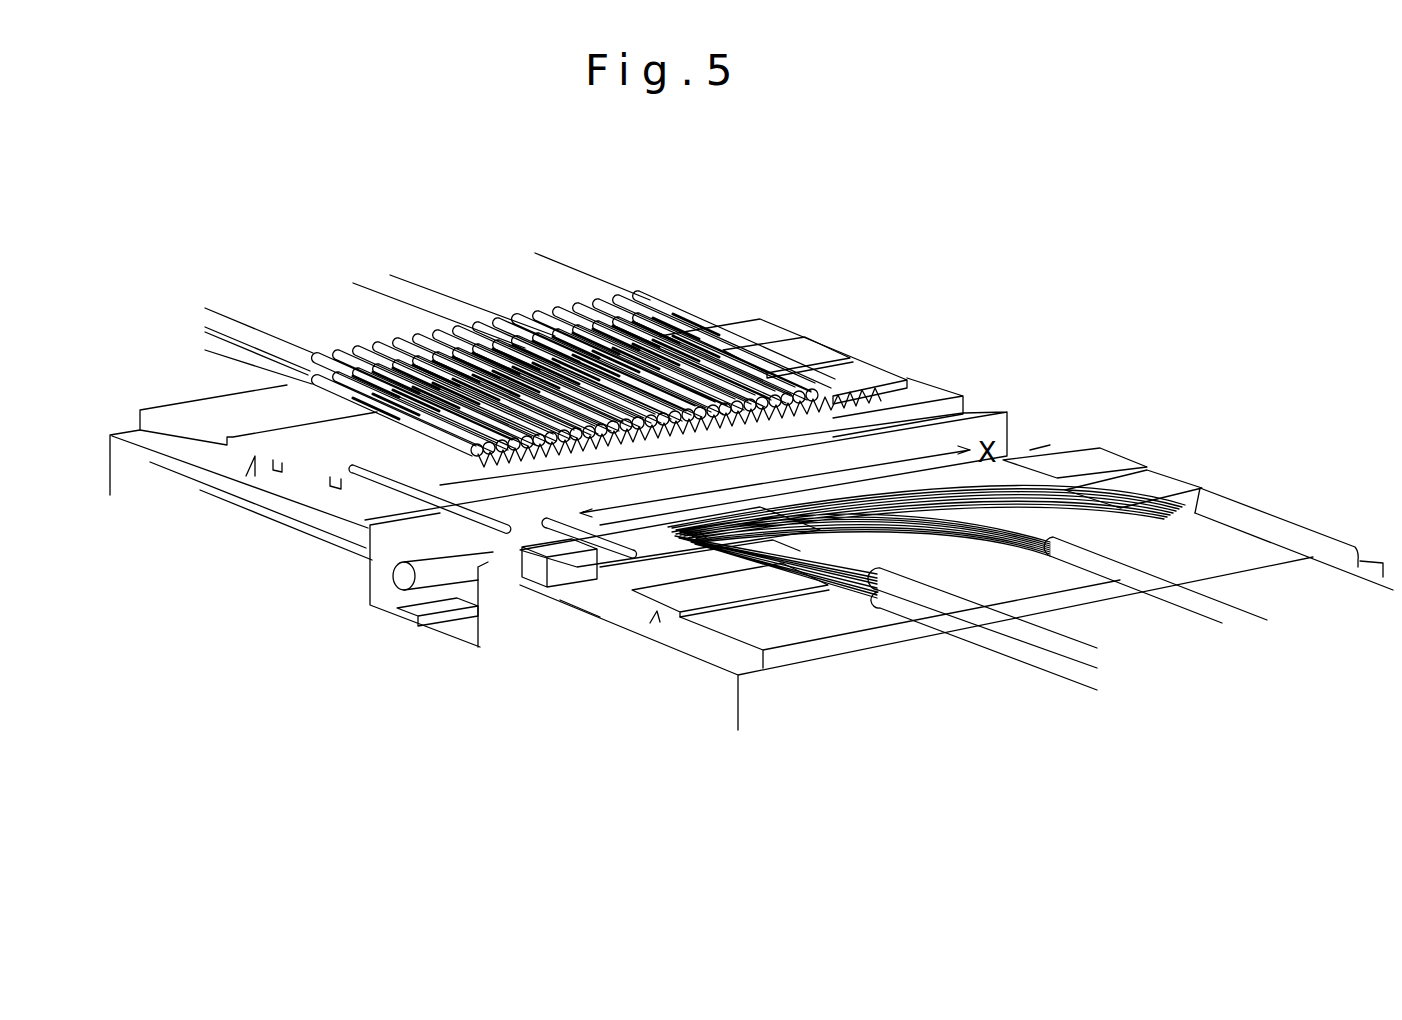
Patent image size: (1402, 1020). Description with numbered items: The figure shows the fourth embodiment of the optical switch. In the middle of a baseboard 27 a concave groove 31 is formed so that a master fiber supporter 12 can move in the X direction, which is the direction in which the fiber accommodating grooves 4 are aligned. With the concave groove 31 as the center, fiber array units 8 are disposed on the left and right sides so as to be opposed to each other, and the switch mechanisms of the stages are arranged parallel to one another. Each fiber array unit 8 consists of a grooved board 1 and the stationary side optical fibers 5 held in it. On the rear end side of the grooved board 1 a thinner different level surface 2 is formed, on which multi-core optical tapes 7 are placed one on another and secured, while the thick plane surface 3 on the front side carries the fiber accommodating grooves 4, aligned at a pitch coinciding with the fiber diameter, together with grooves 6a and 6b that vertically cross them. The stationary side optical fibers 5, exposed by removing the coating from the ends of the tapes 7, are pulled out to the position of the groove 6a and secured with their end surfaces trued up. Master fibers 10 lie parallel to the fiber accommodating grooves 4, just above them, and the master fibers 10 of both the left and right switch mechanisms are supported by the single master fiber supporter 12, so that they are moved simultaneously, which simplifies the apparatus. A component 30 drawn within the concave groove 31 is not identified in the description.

The grooved board 1 is at (178, 410).
The different level surface 2 is at (190, 430).
The thick plane surface 3 is at (830, 322).
The fiber accommodating grooves 4 is at (515, 450).
The stationary side optical fibers 5 is at (345, 398).
The groove 6a is at (333, 480).
The groove 6b is at (276, 468).
The multi-core optical tapes 7 is at (245, 327).
The fiber array unit 8 is at (252, 460).
The master fibers 10 is at (408, 448).
The master fiber supporter 12 is at (513, 530).
The baseboard 27 is at (582, 655).
The block 30 is at (442, 605).
The concave groove 31 is at (370, 560).